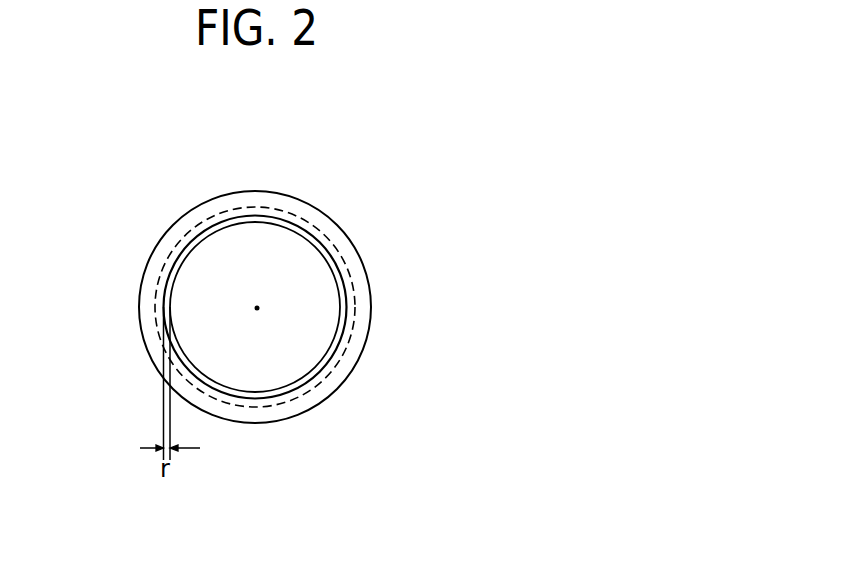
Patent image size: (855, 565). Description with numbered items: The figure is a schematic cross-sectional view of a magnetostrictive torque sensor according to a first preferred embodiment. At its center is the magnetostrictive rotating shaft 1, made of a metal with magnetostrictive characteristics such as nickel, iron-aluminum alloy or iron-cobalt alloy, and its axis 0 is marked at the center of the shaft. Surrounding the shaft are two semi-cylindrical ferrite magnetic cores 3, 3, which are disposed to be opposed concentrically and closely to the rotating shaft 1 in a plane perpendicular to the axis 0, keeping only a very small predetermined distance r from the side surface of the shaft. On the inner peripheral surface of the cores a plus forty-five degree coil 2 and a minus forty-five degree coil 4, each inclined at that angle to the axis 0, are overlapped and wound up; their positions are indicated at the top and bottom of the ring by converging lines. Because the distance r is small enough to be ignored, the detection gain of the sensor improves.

The axis 0 is at (257, 308).
The rotating shaft 1 is at (307, 325).
The coil 2 is at (255, 214).
The semi-cylindrical ferrite magnetic core 3 is at (350, 240).
The coil 4 is at (258, 397).